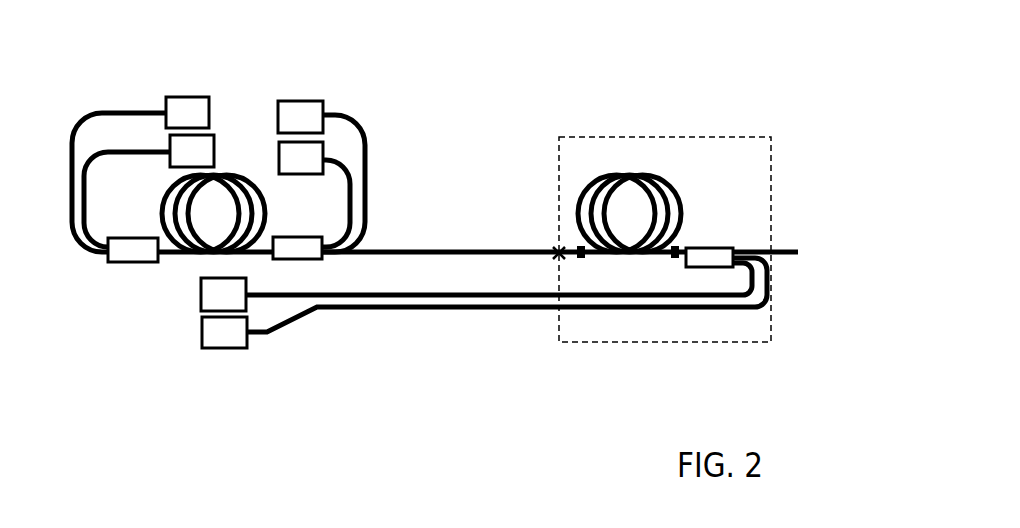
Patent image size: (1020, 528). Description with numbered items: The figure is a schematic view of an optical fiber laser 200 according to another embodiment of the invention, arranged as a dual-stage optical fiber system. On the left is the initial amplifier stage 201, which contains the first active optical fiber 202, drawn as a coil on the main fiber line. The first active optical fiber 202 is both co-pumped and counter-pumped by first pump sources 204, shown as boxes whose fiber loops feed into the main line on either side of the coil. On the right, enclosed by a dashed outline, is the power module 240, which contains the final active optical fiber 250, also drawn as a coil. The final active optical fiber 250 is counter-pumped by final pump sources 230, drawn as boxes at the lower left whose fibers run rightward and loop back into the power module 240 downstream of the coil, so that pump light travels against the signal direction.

The optical fiber laser 200 is at (503, 112).
The initial amplifier stage 201 is at (160, 77).
The first active optical fiber 202 is at (223, 173).
The first pump sources 204 is at (300, 155).
The final pump sources 230 is at (216, 312).
The power module 240 is at (647, 343).
The final active optical fiber 250 is at (673, 193).